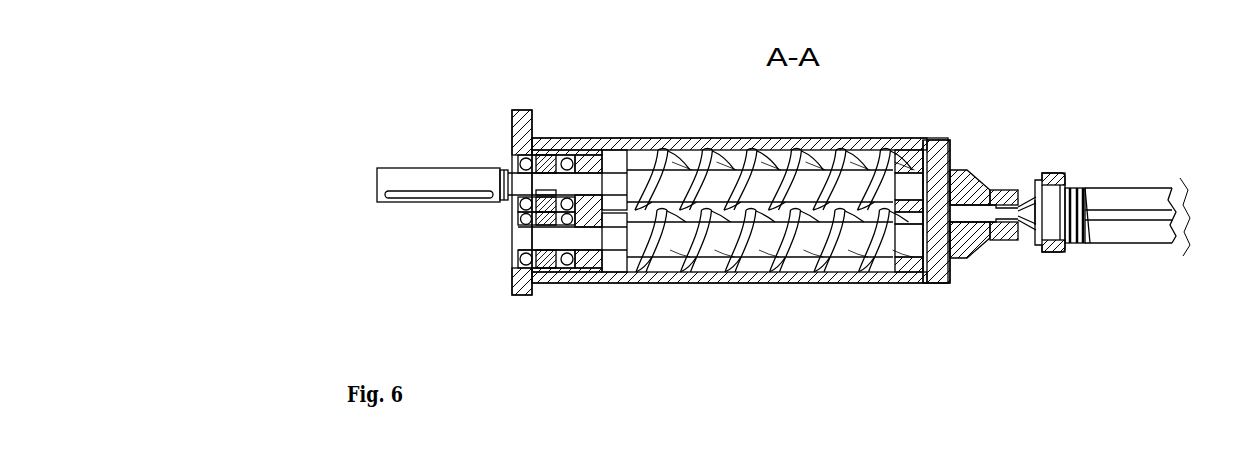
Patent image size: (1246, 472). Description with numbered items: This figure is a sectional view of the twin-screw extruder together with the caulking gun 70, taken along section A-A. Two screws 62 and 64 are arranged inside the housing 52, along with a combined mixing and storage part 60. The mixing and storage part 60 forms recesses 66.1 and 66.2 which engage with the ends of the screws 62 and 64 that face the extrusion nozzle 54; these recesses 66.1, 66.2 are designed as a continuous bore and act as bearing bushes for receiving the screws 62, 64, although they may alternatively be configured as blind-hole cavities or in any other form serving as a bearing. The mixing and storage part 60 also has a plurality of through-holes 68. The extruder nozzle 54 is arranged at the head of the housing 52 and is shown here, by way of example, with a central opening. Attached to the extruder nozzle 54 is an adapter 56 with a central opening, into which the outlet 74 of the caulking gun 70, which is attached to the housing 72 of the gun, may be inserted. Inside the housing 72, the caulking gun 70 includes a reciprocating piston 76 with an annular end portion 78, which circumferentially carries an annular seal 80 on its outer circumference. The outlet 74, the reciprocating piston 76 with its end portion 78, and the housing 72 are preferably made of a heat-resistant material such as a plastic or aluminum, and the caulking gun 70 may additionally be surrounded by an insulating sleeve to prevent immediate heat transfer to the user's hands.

The housing 52 is at (697, 140).
The extruder nozzle 54 is at (960, 180).
The adapter 56 is at (1005, 240).
The mixing and storage part 60 is at (907, 262).
The screw 62 is at (807, 175).
The screw 64 is at (781, 248).
The recess 66.1 is at (904, 178).
The recess 66.2 is at (907, 242).
The through-holes 68 is at (925, 270).
The caulking gun 70 is at (1112, 125).
The housing 72 is at (1100, 188).
The outlet 74 is at (1043, 172).
The reciprocating piston 76 is at (1140, 210).
The annular end portion 78 is at (1085, 238).
The annular seal 80 is at (1072, 245).